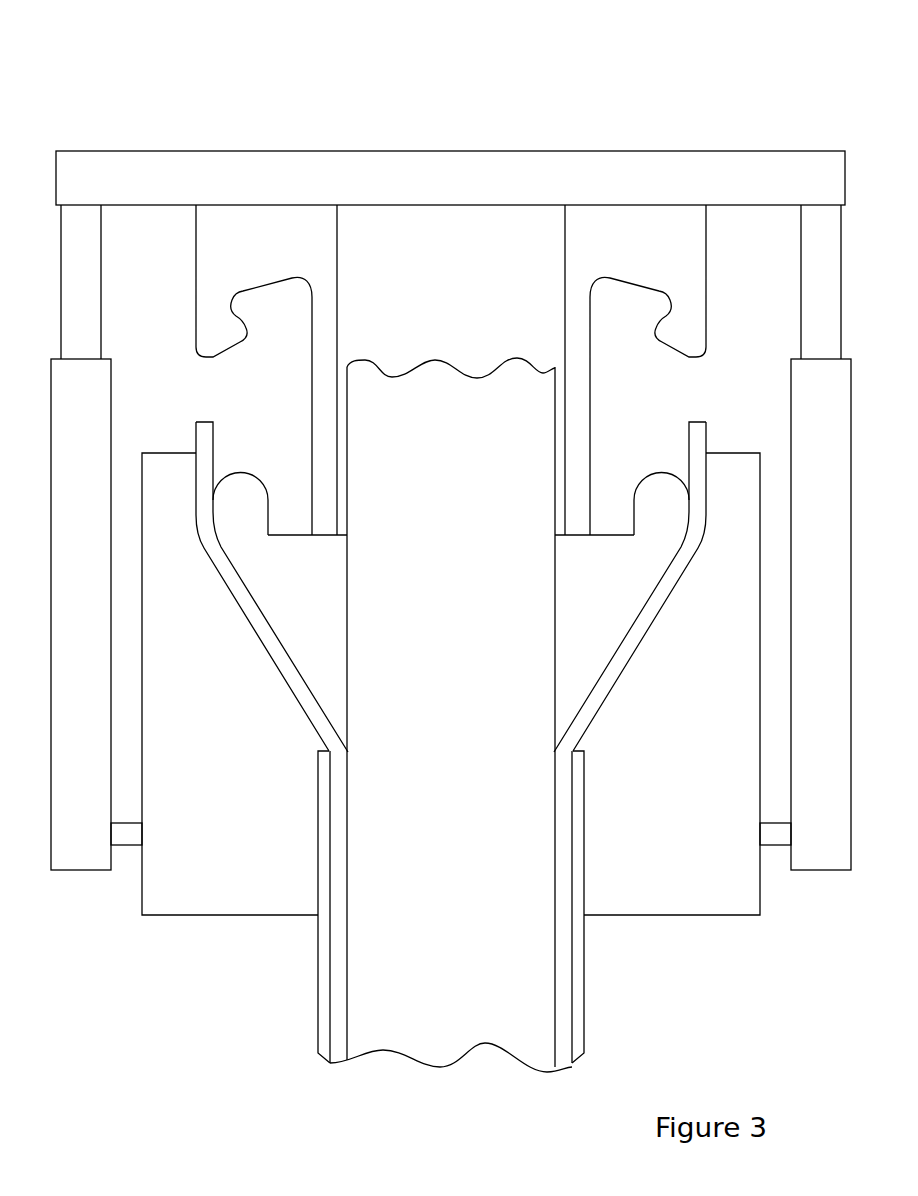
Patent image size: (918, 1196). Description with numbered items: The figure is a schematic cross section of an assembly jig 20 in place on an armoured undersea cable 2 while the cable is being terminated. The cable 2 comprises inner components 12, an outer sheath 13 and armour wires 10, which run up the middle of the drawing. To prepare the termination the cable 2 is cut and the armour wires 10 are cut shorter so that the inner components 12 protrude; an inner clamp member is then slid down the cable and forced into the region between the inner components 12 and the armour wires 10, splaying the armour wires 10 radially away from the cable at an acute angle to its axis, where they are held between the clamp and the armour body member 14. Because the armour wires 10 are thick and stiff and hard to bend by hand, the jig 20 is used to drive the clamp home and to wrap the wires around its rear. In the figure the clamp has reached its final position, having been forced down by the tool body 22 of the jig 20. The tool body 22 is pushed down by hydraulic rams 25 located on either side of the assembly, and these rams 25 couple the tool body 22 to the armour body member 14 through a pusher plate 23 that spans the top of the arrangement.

The armoured undersea cable 2 is at (618, 1038).
The armour wires 10 is at (565, 947).
The inner components 12 is at (488, 1017).
The outer sheath 13 is at (580, 985).
The armour body member 14 is at (723, 903).
The assembly jig 20 is at (134, 93).
The tool body 22 is at (282, 225).
The pusher plate 23 is at (452, 161).
The hydraulic rams 25 is at (78, 853).